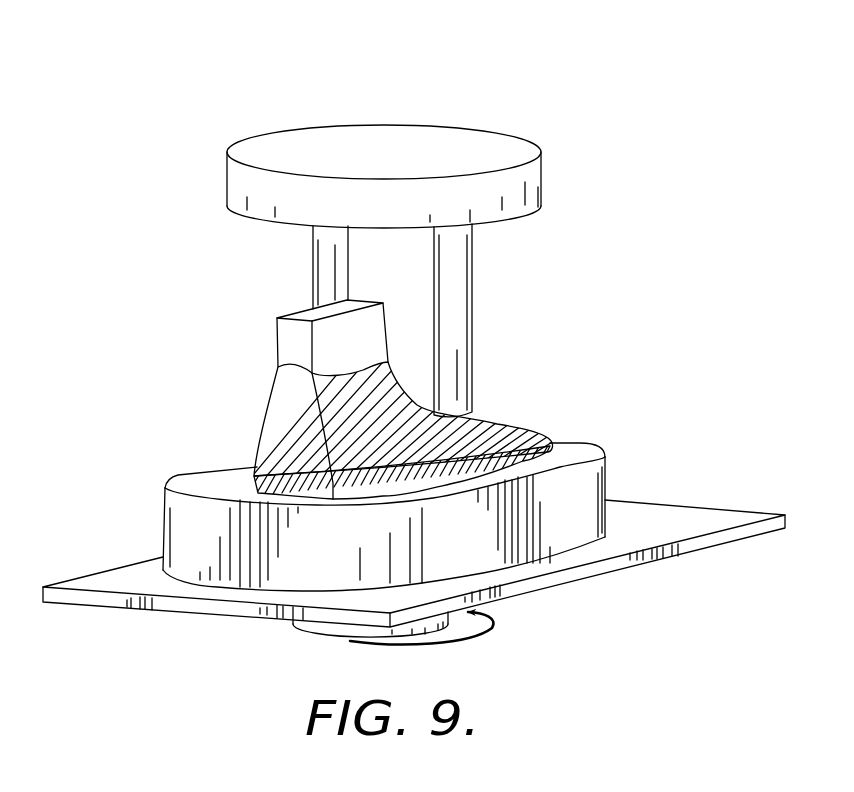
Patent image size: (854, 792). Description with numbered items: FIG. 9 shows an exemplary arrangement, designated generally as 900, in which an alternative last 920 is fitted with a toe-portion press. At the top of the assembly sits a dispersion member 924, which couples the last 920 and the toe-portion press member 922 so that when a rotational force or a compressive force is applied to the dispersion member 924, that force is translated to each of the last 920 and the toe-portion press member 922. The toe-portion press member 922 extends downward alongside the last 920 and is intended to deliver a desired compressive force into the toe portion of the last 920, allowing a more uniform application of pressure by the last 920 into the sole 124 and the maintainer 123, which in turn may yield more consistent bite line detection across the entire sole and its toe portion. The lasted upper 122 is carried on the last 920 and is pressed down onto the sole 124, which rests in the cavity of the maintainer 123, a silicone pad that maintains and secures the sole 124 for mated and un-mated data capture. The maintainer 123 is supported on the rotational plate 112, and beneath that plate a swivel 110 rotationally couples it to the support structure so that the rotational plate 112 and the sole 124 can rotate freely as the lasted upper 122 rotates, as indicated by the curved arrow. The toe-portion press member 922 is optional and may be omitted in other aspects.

The shoe last processing system 900 is at (171, 66).
The dispersion member 924 is at (473, 136).
The toe-portion press member 922 is at (478, 287).
The last 920 is at (282, 339).
The lasted upper 122 is at (275, 407).
The sole 124 is at (257, 485).
The maintainer 123 is at (588, 447).
The rotational plate 112 is at (85, 580).
The swivel 110 is at (322, 633).